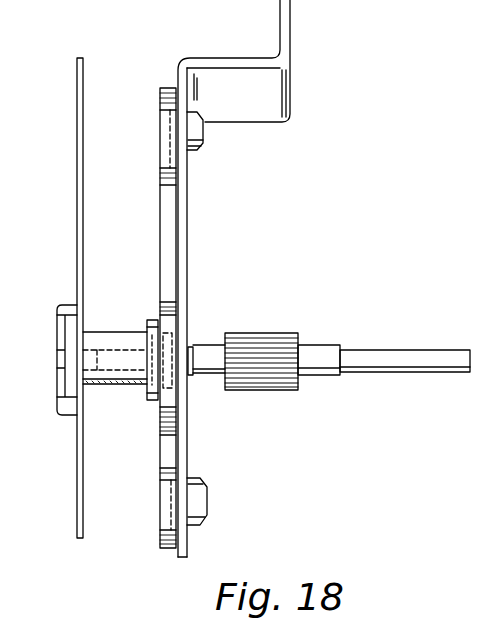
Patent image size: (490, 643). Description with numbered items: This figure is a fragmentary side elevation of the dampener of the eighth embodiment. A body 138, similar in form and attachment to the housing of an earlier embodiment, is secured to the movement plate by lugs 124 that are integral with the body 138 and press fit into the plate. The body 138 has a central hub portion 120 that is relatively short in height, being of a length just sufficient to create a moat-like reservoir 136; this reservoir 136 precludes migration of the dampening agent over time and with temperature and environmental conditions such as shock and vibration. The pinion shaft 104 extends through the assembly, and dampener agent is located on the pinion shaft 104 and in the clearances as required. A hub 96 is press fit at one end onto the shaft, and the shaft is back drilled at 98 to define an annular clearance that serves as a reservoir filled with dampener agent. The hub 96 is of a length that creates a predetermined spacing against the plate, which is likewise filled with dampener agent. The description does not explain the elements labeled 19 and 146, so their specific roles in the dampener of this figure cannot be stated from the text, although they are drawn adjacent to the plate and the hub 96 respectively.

The mounting plate 19 is at (84, 171).
The body 138 is at (159, 248).
The bolt head 146 is at (56, 389).
The hub 96 is at (102, 332).
The back drilled portion 98 is at (113, 373).
The central hub portion 120 is at (151, 319).
The moat-like reservoir 136 is at (171, 345).
The pinion shaft 104 is at (280, 333).
The lugs 124 is at (203, 149).